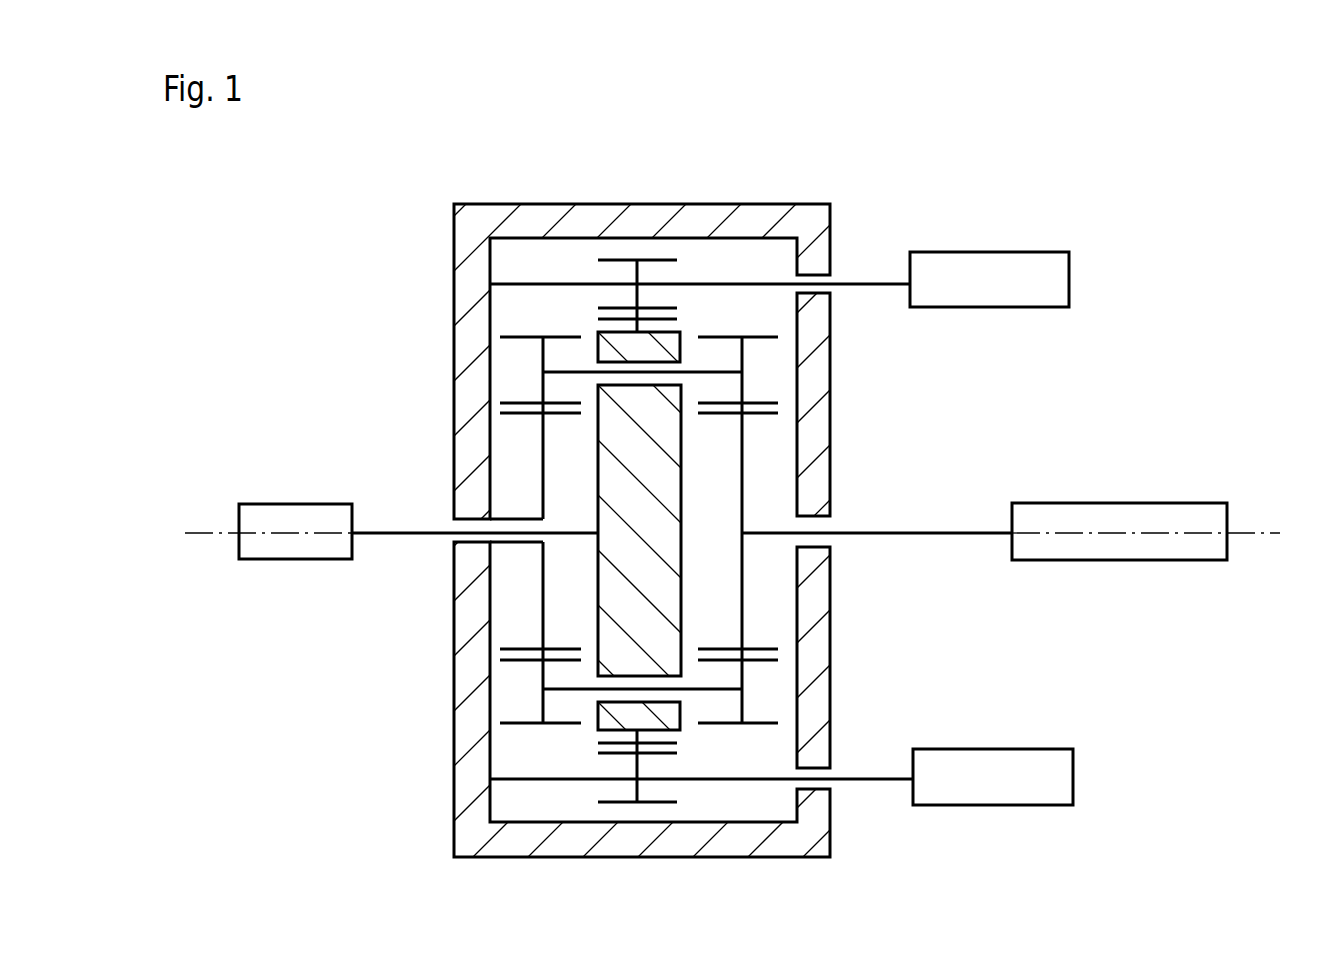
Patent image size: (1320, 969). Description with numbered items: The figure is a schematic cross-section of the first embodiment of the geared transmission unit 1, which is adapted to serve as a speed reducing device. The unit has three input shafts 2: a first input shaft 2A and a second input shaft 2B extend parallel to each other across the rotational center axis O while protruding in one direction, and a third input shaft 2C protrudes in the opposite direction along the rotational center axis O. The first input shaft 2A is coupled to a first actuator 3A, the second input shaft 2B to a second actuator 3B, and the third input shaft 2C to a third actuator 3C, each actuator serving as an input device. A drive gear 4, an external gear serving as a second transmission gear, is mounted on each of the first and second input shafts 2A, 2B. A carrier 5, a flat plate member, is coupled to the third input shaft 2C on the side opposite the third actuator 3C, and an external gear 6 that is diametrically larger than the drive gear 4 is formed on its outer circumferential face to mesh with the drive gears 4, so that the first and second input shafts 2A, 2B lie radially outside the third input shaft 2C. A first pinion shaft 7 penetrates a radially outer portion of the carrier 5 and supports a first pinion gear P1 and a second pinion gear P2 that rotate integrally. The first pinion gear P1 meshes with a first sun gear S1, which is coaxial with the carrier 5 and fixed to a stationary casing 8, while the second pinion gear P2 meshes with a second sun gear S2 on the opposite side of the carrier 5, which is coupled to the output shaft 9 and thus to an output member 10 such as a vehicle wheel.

The geared transmission unit 1 is at (755, 114).
The input shafts 2 is at (557, 491).
The first input shaft 2A is at (861, 282).
The second input shaft 2B is at (868, 776).
The third input shaft 2C is at (380, 531).
The first actuator 3A is at (1000, 252).
The second actuator 3B is at (995, 748).
The third actuator 3C is at (295, 561).
The drive gear 4 is at (670, 258).
The carrier 5 is at (670, 556).
The external gear 6 is at (667, 327).
The first pinion shaft 7 is at (573, 372).
The casing 8 is at (463, 348).
The output shaft 9 is at (933, 531).
The output member 10 is at (1090, 502).
The first pinion gear P1 is at (520, 337).
The second pinion gear P2 is at (765, 337).
The first sun gear S1 is at (520, 648).
The second sun gear S2 is at (765, 414).
The rotational center axis O is at (1158, 533).